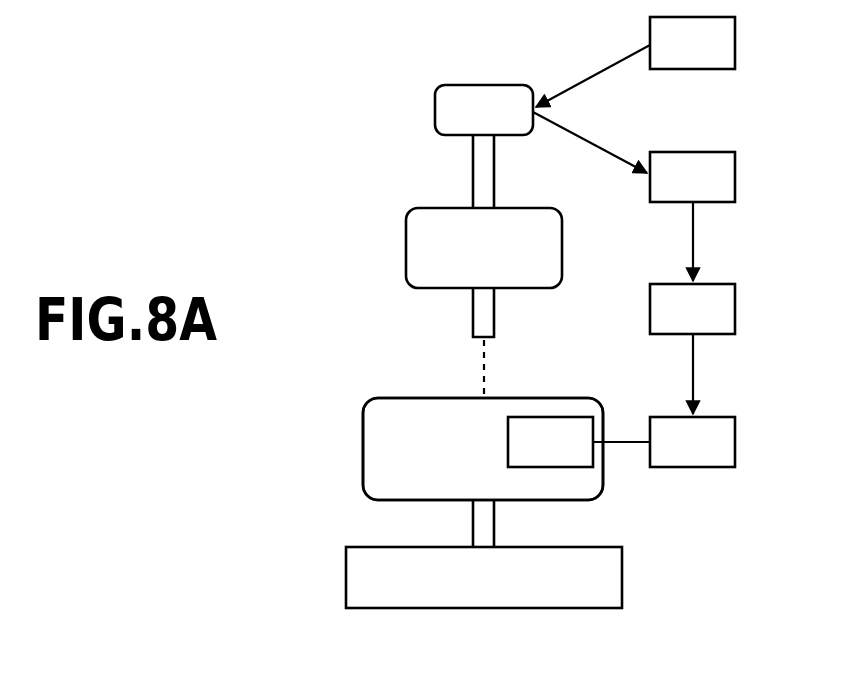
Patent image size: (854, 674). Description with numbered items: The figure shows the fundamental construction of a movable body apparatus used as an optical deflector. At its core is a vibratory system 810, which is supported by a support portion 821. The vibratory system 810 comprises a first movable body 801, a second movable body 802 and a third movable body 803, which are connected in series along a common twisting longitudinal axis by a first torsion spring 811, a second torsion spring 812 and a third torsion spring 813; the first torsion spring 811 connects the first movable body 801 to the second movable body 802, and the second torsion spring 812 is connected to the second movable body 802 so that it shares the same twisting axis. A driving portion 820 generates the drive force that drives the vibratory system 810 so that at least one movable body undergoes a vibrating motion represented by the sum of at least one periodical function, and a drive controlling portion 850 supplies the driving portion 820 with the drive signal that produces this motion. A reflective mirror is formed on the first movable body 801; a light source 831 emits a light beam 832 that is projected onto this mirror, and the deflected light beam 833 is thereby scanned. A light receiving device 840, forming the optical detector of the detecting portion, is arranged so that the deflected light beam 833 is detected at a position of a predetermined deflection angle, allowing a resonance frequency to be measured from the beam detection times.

The vibratory system 810 is at (341, 231).
The first movable body 801 is at (484, 110).
The second movable body 802 is at (484, 248).
The third movable body 803 is at (483, 449).
The first torsion spring 811 is at (473, 177).
The second torsion spring 812 is at (473, 316).
The third torsion spring 813 is at (473, 524).
The driving portion 820 is at (621, 442).
The support portion 821 is at (622, 577).
The light source 831 is at (692, 43).
The light beam 832 is at (579, 82).
The deflected light beam 833 is at (586, 134).
The light receiving device 840 is at (692, 216).
The drive controlling portion 850 is at (692, 349).